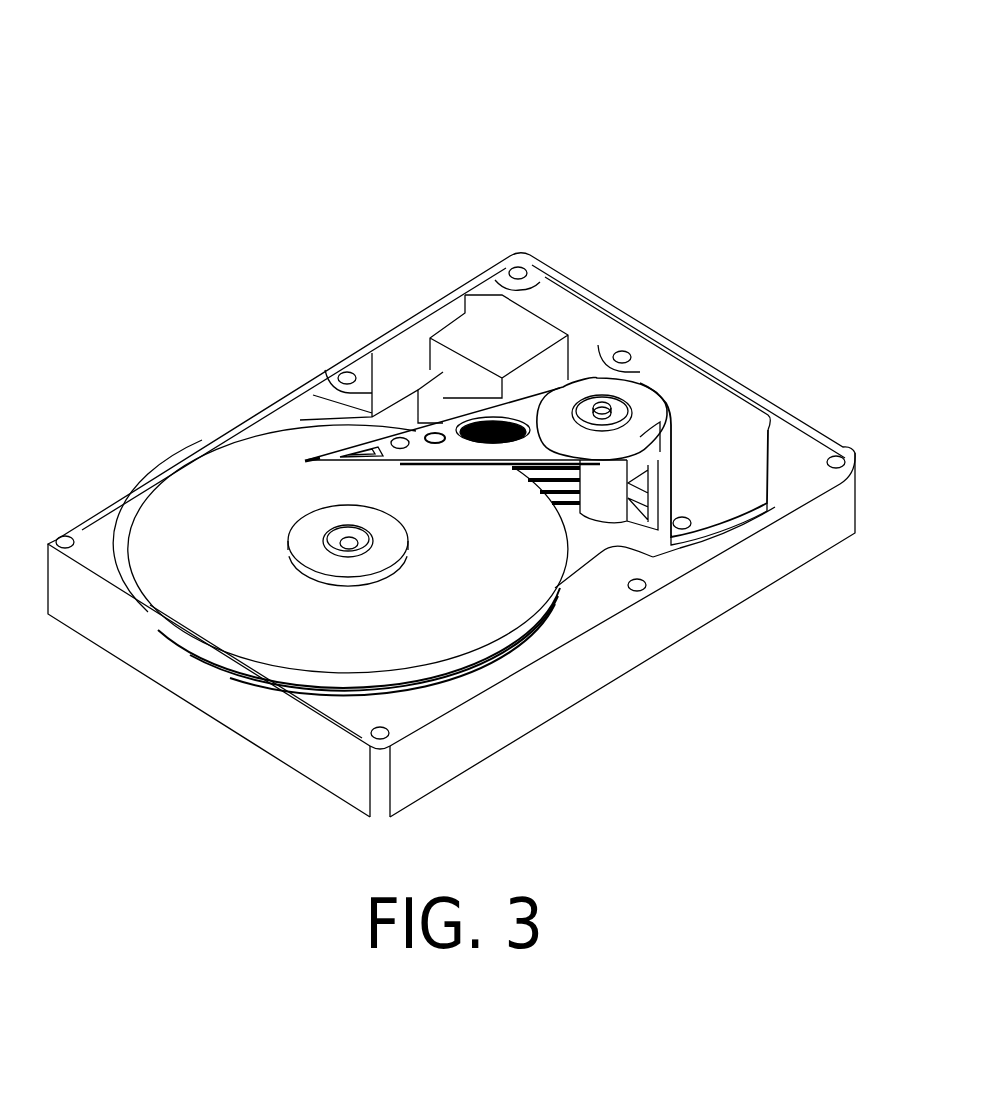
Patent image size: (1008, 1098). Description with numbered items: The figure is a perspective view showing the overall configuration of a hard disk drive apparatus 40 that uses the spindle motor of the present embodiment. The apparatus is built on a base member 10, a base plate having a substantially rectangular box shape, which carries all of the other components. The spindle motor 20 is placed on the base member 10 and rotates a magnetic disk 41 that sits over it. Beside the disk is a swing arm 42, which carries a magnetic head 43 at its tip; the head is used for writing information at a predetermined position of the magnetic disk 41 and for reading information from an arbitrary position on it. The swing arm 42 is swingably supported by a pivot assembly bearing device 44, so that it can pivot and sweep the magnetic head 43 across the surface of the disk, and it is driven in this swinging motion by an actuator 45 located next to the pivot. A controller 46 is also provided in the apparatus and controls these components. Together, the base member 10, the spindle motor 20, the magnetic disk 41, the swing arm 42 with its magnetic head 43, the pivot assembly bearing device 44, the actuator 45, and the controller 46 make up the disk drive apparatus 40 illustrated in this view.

The hard disk drive apparatus 40 is at (280, 90).
The base member 10 is at (617, 307).
The magnetic disk 41 is at (210, 537).
The swing arm 42 is at (452, 432).
The magnetic head 43 is at (315, 457).
The pivot assembly bearing device 44 is at (622, 410).
The actuator 45 is at (705, 455).
The controller 46 is at (497, 343).
The spindle motor 20 is at (367, 542).